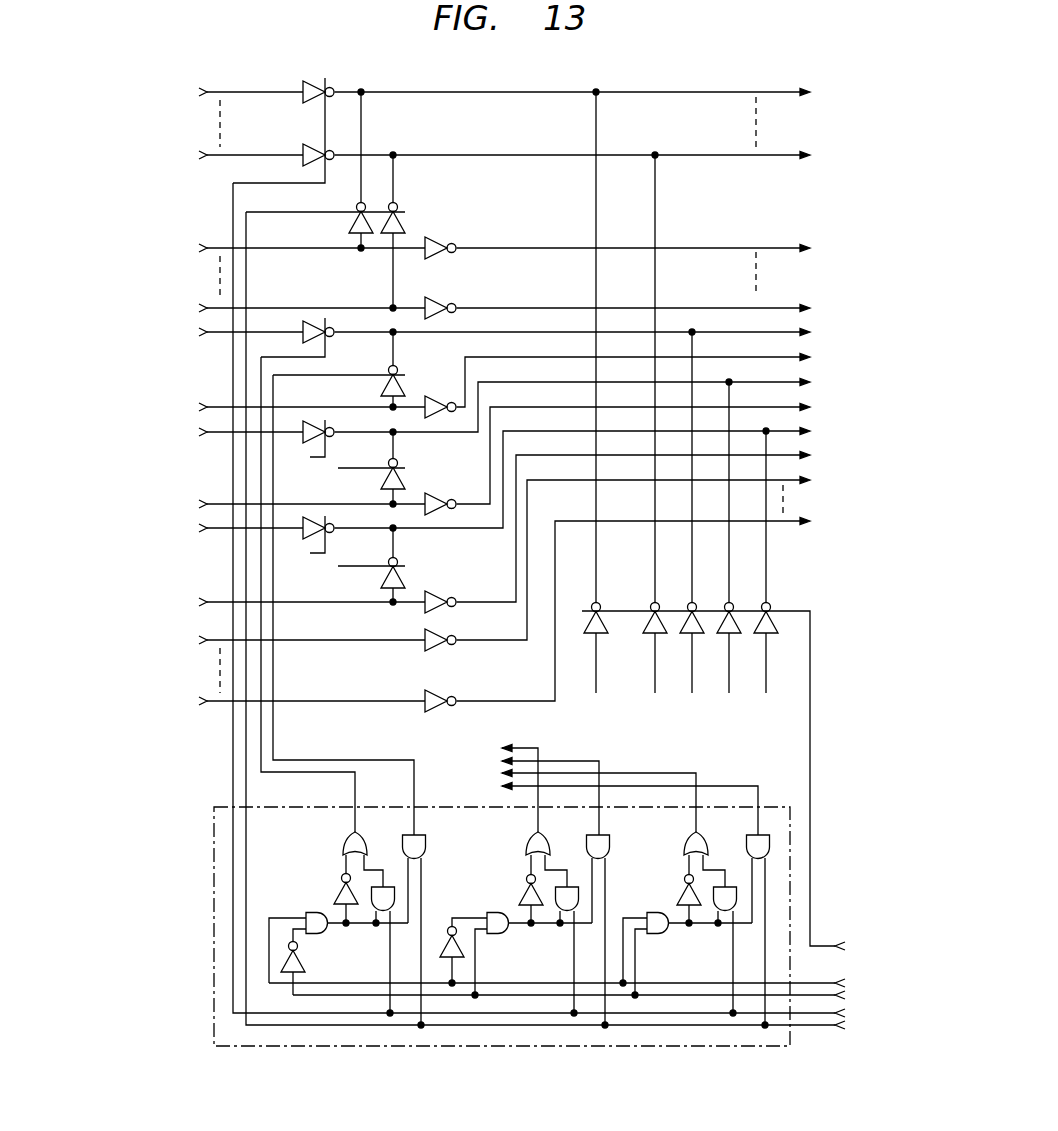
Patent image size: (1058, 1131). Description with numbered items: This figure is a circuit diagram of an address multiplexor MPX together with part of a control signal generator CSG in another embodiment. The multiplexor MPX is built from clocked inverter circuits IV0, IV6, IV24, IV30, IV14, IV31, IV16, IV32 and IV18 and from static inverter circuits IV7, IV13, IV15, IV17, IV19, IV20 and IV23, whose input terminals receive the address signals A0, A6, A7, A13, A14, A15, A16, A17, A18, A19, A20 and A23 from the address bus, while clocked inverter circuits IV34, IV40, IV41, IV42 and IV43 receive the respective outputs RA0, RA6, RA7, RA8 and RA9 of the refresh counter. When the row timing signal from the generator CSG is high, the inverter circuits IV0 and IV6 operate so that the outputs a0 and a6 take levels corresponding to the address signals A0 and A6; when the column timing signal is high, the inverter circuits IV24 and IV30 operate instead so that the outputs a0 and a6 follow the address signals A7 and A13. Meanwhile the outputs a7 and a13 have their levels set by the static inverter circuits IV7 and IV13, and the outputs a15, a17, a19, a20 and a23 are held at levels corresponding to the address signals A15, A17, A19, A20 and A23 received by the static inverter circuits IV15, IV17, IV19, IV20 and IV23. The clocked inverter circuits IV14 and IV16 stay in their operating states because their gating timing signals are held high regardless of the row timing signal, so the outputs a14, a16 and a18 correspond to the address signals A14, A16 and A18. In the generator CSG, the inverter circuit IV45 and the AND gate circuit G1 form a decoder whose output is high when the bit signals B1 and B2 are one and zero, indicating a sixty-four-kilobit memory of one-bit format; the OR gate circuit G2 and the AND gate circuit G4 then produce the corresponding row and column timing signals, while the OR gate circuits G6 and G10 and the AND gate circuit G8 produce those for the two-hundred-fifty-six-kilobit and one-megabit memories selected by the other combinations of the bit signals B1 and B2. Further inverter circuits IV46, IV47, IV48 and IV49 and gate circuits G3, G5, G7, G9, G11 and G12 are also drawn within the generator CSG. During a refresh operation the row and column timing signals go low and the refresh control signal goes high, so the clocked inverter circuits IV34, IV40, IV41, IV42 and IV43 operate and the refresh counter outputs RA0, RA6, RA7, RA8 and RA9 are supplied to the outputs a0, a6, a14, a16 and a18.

The clocked inverter circuit IV0 is at (312, 87).
The clocked inverter circuit IV6 is at (300, 148).
The static inverter circuit IV7 is at (440, 245).
The static inverter circuit IV13 is at (440, 305).
The clocked inverter circuit IV14 is at (325, 342).
The static inverter circuit IV15 is at (435, 395).
The clocked inverter circuit IV16 is at (325, 442).
The static inverter circuit IV17 is at (438, 502).
The clocked inverter circuit IV18 is at (325, 537).
The static inverter circuit IV19 is at (437, 599).
The static inverter circuit IV20 is at (437, 639).
The static inverter circuit IV23 is at (437, 699).
The clocked inverter circuit IV24 is at (347, 222).
The clocked inverter circuit IV30 is at (405, 222).
The clocked inverter circuit IV31 is at (383, 381).
The clocked inverter circuit IV32 is at (402, 477).
The clocked inverter circuit IV34 is at (583, 634).
The clocked inverter circuit IV40 is at (640, 634).
The clocked inverter circuit IV41 is at (682, 634).
The clocked inverter circuit IV42 is at (719, 634).
The clocked inverter circuit IV43 is at (756, 634).
The inverter circuit IV45 is at (306, 964).
The inverter IV46 is at (340, 895).
The inverter IV47 is at (442, 926).
The inverter IV48 is at (526, 895).
The inverter IV49 is at (684, 893).
The AND gate circuit G1 is at (328, 936).
The OR gate circuit G2 is at (342, 842).
The AND gate G3 is at (380, 864).
The AND gate circuit G4 is at (427, 841).
The AND gate G5 is at (508, 936).
The OR gate circuit G6 is at (524, 842).
The AND gate G7 is at (564, 864).
The AND gate circuit G8 is at (610, 841).
The AND gate G9 is at (656, 940).
The OR gate circuit G10 is at (684, 843).
The AND gate G11 is at (708, 919).
The AND gate G12 is at (746, 842).
The address multiplexor MPX is at (548, 205).
The control signal generator CSG is at (214, 921).
The address signal A0 is at (235, 94).
The address signal A6 is at (235, 157).
The address signal A7 is at (296, 250).
The address signal A13 is at (296, 310).
The address signal A14 is at (235, 334).
The address signal A15 is at (296, 409).
The address signal A16 is at (235, 434).
The address signal A17 is at (296, 506).
The address signal A18 is at (235, 530).
The address signal A19 is at (296, 604).
The address signal A20 is at (296, 642).
The address signal A23 is at (296, 703).
The multiplexor output a0 is at (586, 94).
The multiplexor output a6 is at (586, 156).
The multiplexor output a7 is at (597, 249).
The multiplexor output a13 is at (617, 309).
The multiplexor output a14 is at (589, 333).
The multiplexor output a15 is at (617, 378).
The multiplexor output a16 is at (589, 403).
The multiplexor output a17 is at (617, 452).
The multiplexor output a18 is at (589, 476).
The multiplexor output a19 is at (617, 525).
The multiplexor output a20 is at (650, 555).
The multiplexor output a23 is at (650, 606).
The refresh counter output RA0 is at (590, 708).
The refresh counter output RA6 is at (650, 708).
The refresh counter output RA7 is at (688, 708).
The refresh counter output RA8 is at (725, 708).
The refresh counter output RA9 is at (763, 708).
The bit signal B1 is at (845, 983).
The bit signal B2 is at (845, 995).